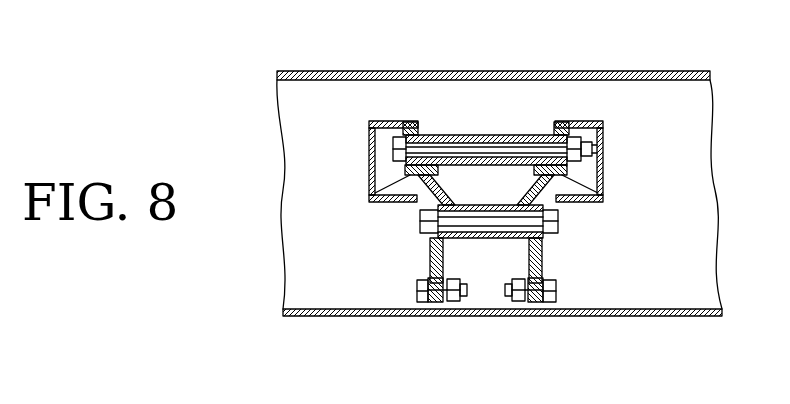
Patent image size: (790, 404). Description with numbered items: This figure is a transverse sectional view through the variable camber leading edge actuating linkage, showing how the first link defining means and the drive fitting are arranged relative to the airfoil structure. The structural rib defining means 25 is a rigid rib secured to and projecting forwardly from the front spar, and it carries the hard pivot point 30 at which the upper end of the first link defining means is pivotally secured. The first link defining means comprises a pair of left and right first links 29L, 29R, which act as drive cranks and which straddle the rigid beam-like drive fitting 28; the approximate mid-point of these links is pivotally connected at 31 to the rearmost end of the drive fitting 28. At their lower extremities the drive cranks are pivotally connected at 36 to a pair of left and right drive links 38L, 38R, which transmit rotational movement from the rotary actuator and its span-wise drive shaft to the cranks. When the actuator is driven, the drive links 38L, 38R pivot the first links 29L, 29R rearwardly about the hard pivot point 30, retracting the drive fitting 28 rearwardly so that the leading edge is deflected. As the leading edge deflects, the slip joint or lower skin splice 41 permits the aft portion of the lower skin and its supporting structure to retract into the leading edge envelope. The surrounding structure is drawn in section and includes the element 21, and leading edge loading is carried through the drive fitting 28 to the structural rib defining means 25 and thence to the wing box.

The top wall 21 is at (492, 70).
The structural rib defining means 25 is at (379, 121).
The drive fitting 28 is at (489, 240).
The left first link 29L is at (418, 202).
The right first link 29R is at (552, 207).
The hard pivot point 30 is at (491, 148).
The pivotal connection 31 is at (489, 207).
The pivotal connection 36 is at (510, 295).
The left drive link 38L is at (437, 303).
The right drive link 38R is at (532, 303).
The slip joint 41 is at (702, 315).